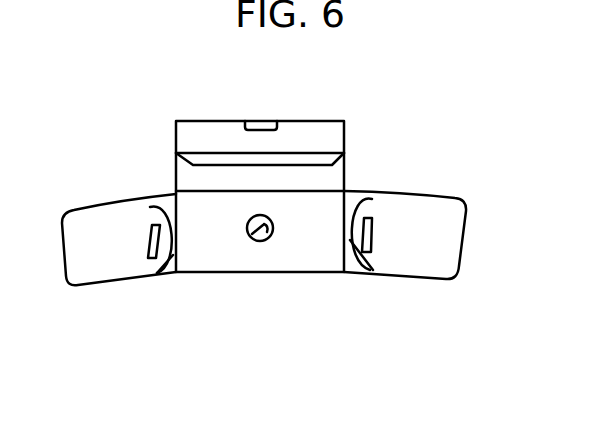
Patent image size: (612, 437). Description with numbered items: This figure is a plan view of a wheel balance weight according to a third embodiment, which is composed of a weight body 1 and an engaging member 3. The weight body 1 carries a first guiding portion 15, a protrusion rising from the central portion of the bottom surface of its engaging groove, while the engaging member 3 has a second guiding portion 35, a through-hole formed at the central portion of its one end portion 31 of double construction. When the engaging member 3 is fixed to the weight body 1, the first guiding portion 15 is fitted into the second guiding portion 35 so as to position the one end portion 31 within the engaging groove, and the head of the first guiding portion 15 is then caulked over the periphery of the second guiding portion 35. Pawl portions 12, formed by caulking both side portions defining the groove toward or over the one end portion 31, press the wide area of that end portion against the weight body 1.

The weight body 1 is at (422, 210).
The engaging member 3 is at (322, 130).
The pawl portion 12 is at (168, 248).
The first guiding portion 15 is at (248, 241).
The one end portion 31 is at (263, 258).
The second guiding portion 35 is at (270, 242).